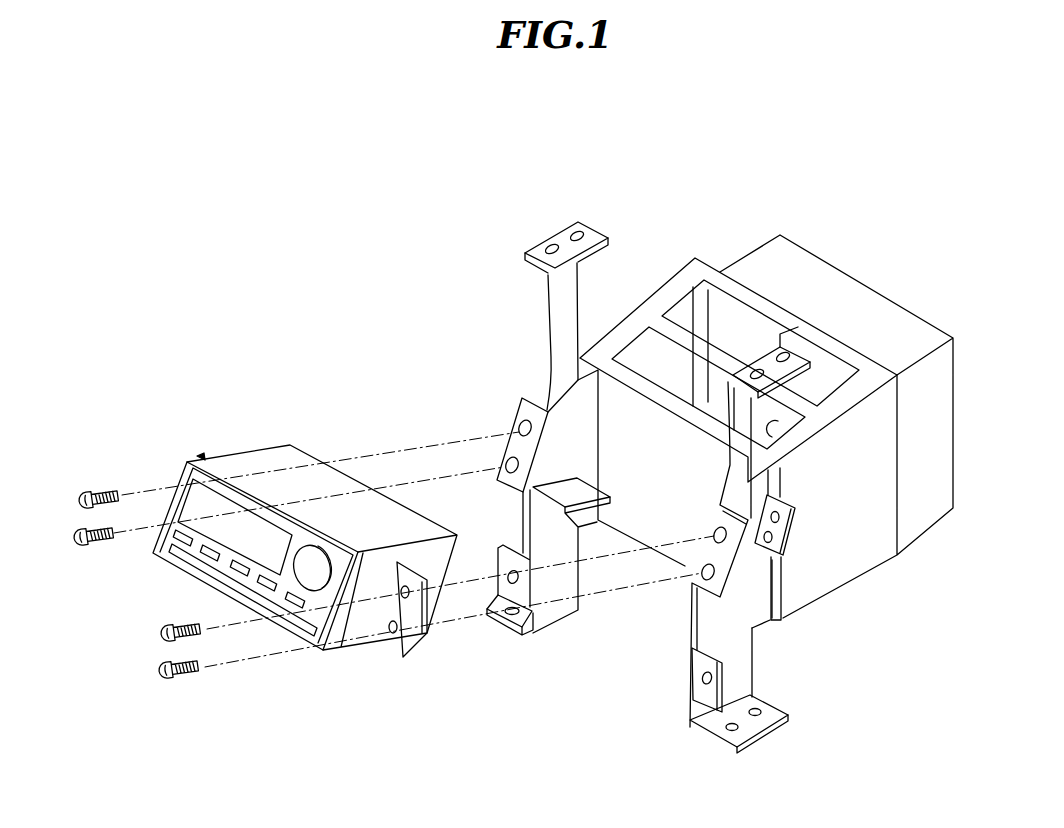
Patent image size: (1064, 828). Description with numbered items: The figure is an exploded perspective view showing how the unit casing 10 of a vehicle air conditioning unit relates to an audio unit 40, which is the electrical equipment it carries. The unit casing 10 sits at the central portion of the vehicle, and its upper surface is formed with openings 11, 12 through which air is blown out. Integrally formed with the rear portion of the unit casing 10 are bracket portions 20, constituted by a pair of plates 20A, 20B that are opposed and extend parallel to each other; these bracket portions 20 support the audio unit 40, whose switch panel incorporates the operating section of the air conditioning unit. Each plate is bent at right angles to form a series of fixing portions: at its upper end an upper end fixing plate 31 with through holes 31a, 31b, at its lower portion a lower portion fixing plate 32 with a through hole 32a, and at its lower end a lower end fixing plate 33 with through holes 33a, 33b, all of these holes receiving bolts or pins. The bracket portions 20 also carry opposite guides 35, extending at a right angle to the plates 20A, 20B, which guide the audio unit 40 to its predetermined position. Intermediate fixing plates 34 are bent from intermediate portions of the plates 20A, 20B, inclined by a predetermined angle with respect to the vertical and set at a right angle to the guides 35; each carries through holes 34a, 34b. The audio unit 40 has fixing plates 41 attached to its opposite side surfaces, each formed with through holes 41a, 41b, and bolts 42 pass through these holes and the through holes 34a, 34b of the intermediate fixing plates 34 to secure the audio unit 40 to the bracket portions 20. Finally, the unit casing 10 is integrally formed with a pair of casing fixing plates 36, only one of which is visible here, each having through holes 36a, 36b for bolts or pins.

The unit casing 10 is at (753, 235).
The opening 11 is at (837, 367).
The opening 12 is at (812, 437).
The bracket portion 20 is at (535, 288).
The plate 20A is at (512, 418).
The plate 20B is at (752, 568).
The upper end fixing plate 31 is at (695, 277).
The through hole 31a is at (550, 247).
The through hole 31b is at (578, 234).
The lower portion fixing plate 32 is at (811, 691).
The through hole 32a is at (725, 692).
The lower end fixing plate 33 is at (699, 705).
The through hole 33a is at (748, 733).
The through hole 33b is at (770, 712).
The intermediate fixing plate 34 is at (445, 397).
The through hole 34a is at (503, 466).
The through hole 34b is at (515, 422).
The guide 35 is at (580, 510).
The casing fixing plate 36 is at (890, 563).
The through hole 36a is at (783, 577).
The through hole 36b is at (783, 550).
The audio unit 40 is at (252, 448).
The fixing plate 41 is at (274, 571).
The through hole 41a is at (390, 655).
The through hole 41b is at (423, 632).
The bolt 42 is at (103, 541).